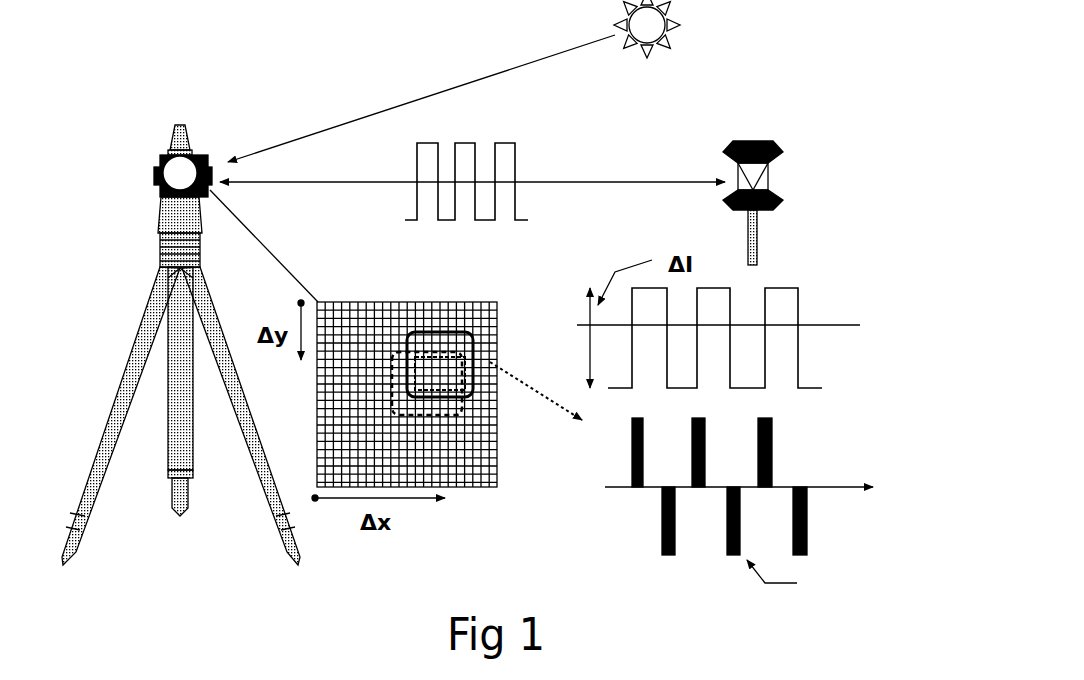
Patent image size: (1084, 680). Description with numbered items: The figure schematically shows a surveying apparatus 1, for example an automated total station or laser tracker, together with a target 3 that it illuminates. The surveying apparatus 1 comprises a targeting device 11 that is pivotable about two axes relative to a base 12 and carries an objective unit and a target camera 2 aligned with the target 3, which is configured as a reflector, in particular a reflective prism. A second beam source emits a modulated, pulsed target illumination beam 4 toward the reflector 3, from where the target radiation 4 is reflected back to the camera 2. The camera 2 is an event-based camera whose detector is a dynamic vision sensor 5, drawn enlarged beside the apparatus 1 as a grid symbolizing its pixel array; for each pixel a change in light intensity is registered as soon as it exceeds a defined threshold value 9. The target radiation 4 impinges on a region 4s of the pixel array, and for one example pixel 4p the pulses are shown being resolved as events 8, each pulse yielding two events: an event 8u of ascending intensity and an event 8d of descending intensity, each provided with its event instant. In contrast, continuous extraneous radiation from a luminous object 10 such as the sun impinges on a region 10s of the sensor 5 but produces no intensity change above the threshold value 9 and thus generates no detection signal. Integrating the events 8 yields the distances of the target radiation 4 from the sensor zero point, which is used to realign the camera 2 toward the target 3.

The surveying apparatus 1 is at (120, 125).
The target camera 2 is at (208, 152).
The target 3 is at (762, 143).
The target illumination beam 4 is at (482, 138).
The region of the pixel array 4s is at (417, 338).
The pixel 4p is at (478, 342).
The dynamic vision sensor 5 is at (385, 288).
The events 8 is at (815, 422).
The events of ascending intensity 8u is at (627, 458).
The events of descending intensity 8d is at (627, 522).
The threshold value 9 is at (823, 326).
The luminous object 10 is at (662, 25).
The region of the sensor 10s is at (437, 420).
The targeting device 11 is at (178, 218).
The base 12 is at (172, 313).